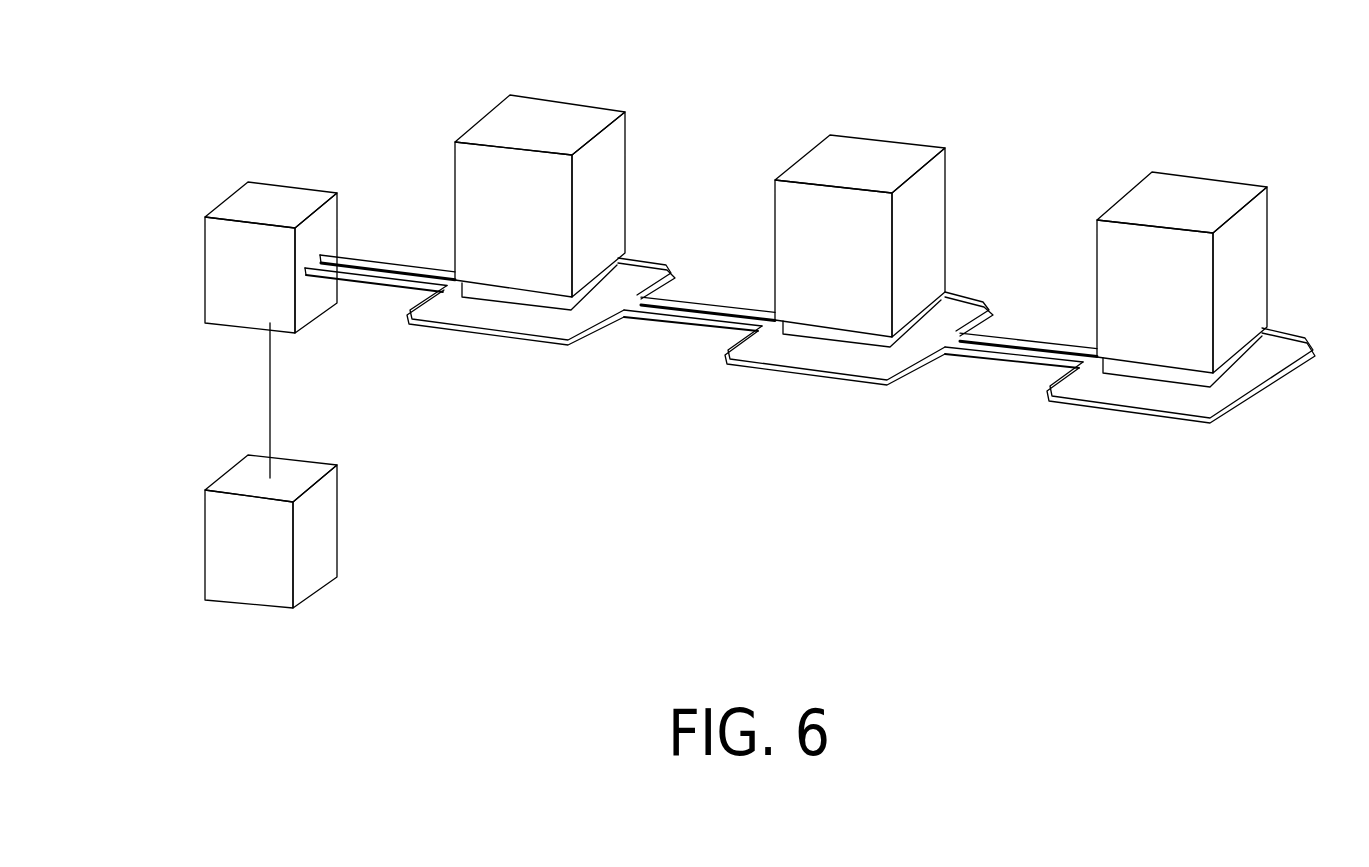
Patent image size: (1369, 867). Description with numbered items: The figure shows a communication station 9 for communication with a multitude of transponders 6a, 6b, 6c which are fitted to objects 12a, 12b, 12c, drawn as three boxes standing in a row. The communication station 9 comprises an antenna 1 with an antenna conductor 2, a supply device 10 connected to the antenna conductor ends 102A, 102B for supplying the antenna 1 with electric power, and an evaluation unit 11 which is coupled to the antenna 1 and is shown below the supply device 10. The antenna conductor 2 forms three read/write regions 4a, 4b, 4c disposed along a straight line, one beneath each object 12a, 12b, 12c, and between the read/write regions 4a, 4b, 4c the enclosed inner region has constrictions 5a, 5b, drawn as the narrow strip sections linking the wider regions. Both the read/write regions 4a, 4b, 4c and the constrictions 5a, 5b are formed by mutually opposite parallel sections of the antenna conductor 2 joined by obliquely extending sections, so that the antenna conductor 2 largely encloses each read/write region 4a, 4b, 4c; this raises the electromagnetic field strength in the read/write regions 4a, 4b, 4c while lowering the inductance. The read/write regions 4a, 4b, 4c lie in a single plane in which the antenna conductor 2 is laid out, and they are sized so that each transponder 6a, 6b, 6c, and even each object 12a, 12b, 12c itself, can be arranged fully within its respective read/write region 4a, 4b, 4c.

The antenna 1 is at (861, 360).
The antenna conductor 2 is at (861, 373).
The first read/write region 4a is at (538, 323).
The second read/write region 4b is at (860, 360).
The third read/write region 4c is at (1180, 397).
The first constriction 5a is at (687, 328).
The second constriction 5b is at (1007, 363).
The first transponder 6a is at (500, 295).
The second transponder 6b is at (813, 332).
The third transponder 6c is at (1143, 372).
The communication station 9 is at (861, 298).
The supply device 10 is at (263, 250).
The evaluation unit 11 is at (260, 542).
The first object 12a is at (540, 185).
The second object 12b is at (865, 172).
The third object 12c is at (1163, 273).
The first antenna conductor end 102A is at (333, 250).
The second antenna conductor end 102B is at (307, 280).